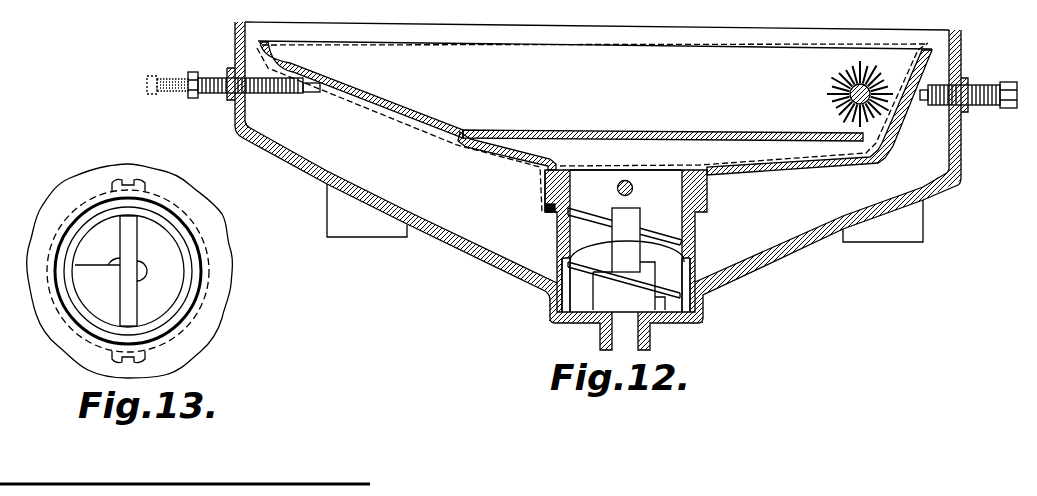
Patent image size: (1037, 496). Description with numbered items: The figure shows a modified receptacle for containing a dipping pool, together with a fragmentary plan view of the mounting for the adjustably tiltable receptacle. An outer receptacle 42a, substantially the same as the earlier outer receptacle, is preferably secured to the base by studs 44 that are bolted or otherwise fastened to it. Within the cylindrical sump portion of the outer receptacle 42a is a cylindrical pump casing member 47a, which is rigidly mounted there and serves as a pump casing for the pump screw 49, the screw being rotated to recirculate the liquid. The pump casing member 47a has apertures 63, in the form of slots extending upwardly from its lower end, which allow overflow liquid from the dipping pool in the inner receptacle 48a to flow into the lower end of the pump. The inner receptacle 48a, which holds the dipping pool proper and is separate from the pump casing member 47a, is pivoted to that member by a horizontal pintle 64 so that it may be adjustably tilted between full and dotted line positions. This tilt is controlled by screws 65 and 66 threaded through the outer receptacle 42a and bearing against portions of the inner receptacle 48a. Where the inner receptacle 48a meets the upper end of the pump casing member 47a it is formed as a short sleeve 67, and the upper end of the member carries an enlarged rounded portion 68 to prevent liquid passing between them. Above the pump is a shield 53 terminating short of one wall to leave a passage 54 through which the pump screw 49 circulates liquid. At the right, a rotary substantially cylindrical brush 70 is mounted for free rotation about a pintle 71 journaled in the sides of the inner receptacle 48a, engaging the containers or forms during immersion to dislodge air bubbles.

In FIG. 12, the outer receptacle 42a is at (812, 271).
In FIG. 12, the studs 44 is at (300, 193).
In FIG. 12, the cylindrical pump casing member 47a is at (690, 241).
In FIG. 13, the cylindrical pump casing member 47a is at (90, 303).
In FIG. 12, the inner receptacle 48a is at (393, 101).
In FIG. 13, the inner receptacle 48a is at (218, 317).
In FIG. 12, the pump screw 49 is at (592, 257).
In FIG. 13, the pump screw 49 is at (88, 262).
In FIG. 12, the shield 53 is at (650, 130).
In FIG. 12, the passage 54 is at (876, 148).
In FIG. 12, the apertures 63 is at (564, 297).
In FIG. 12, the horizontal pintle 64 is at (633, 191).
In FIG. 13, the horizontal pintle 64 is at (130, 302).
In FIG. 12, the screw 65 is at (217, 77).
In FIG. 12, the screw 66 is at (986, 86).
In FIG. 12, the short sleeve 67 is at (546, 187).
In FIG. 12, the enlarged rounded portion 68 is at (548, 207).
In FIG. 13, the enlarged rounded portion 68 is at (168, 222).
In FIG. 12, the brush 70 is at (828, 92).
In FIG. 12, the pintle 71 is at (868, 86).